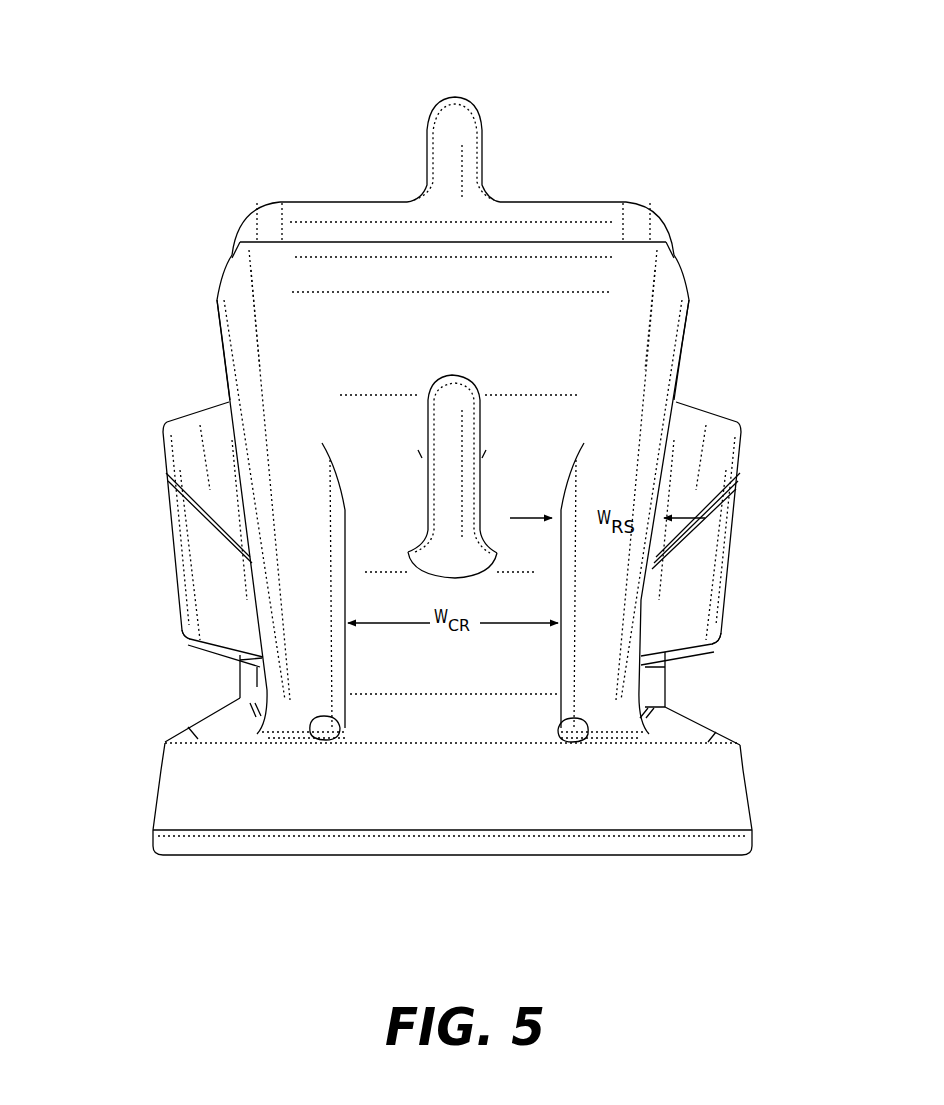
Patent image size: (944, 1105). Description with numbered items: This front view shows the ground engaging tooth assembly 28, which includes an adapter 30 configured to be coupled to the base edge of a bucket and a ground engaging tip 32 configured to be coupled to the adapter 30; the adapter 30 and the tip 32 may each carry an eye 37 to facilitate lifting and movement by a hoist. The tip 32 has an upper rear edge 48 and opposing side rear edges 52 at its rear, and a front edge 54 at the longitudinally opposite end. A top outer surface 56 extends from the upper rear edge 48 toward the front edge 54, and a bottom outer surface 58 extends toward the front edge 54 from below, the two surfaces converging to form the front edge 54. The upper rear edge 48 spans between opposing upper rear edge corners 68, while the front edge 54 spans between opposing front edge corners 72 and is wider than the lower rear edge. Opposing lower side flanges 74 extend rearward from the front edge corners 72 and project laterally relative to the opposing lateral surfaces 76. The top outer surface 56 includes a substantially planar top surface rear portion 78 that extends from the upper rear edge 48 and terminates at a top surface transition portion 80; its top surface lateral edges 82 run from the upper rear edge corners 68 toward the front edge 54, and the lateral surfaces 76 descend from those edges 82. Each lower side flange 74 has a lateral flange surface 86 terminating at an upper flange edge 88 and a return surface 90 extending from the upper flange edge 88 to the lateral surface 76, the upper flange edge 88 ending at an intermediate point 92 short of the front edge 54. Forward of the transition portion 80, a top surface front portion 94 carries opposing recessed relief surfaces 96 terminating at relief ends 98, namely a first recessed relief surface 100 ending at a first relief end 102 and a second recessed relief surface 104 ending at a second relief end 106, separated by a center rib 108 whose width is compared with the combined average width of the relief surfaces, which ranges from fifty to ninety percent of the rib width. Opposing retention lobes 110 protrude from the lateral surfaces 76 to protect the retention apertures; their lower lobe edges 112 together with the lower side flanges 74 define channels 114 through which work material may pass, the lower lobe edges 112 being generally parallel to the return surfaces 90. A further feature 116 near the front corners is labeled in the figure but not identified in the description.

The ground engaging tooth assembly 28 is at (555, 84).
The adapter 30 is at (203, 113).
The ground engaging tip 32 is at (105, 858).
The eye 37 is at (460, 337).
The upper rear edge 48 is at (332, 241).
The side rear edges 52 is at (210, 347).
The front edge 54 is at (547, 848).
The top outer surface 56 is at (595, 270).
The bottom outer surface 58 is at (466, 864).
The upper rear edge corners 68 is at (232, 262).
The front edge corners 72 is at (153, 848).
The lower side flanges 74 is at (193, 732).
The lateral surfaces 76 is at (212, 352).
The top surface rear portion 78 is at (452, 274).
The top surface transition portion 80 is at (530, 435).
The top surface lateral edges 82 is at (263, 382).
The lateral flange surfaces 86 is at (156, 767).
The upper flange edges 88 is at (205, 718).
The return surfaces 90 is at (224, 733).
The intermediate point 92 is at (165, 743).
The top surface front portion 94 is at (455, 688).
The recessed relief surfaces 96 is at (451, 585).
The relief ends 98 is at (340, 728).
The first recessed relief surface 100 is at (598, 655).
The first relief end 102 is at (592, 742).
The second recessed relief surface 104 is at (304, 644).
The second relief end 106 is at (320, 740).
The center rib 108 is at (419, 663).
The retention lobes 110 is at (180, 420).
The lower lobe edges 112 is at (185, 638).
The channels 114 is at (222, 680).
The base lower edge 116 is at (148, 830).